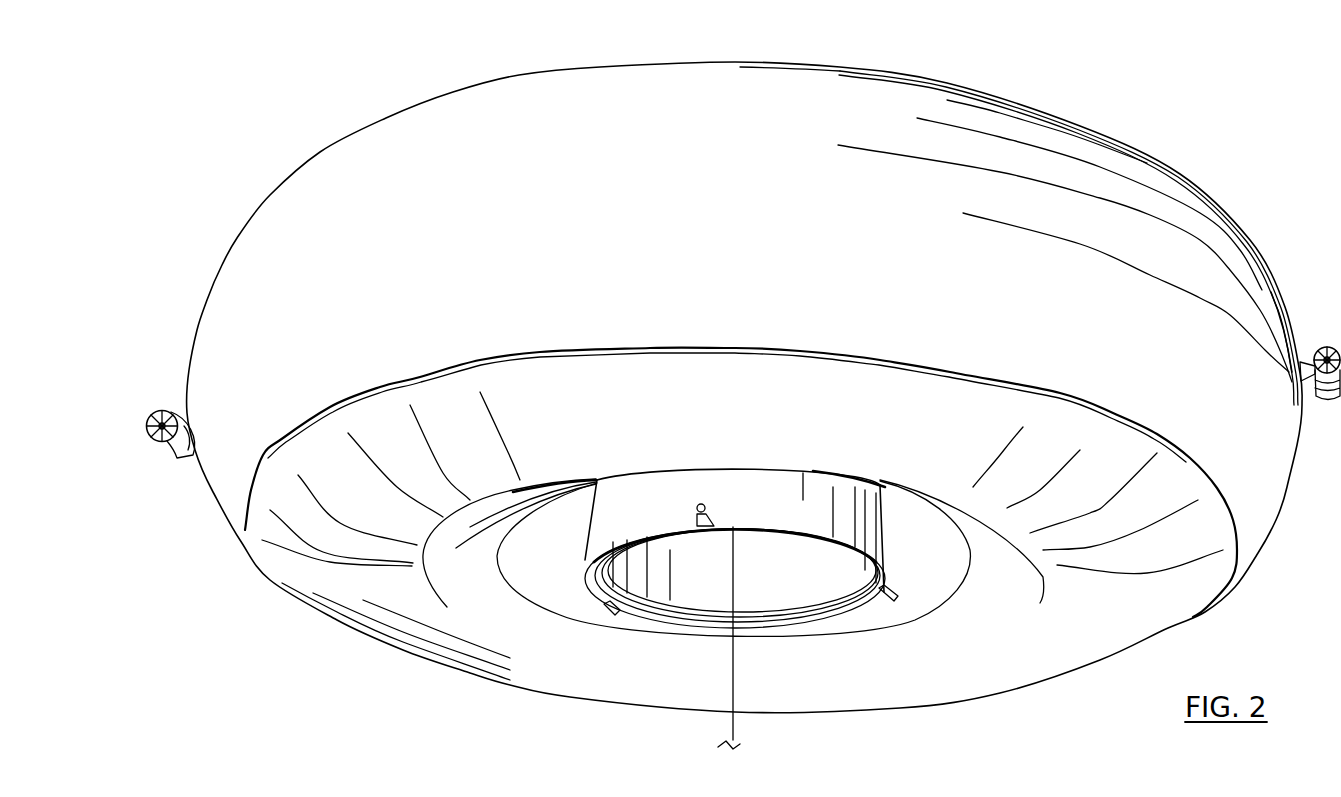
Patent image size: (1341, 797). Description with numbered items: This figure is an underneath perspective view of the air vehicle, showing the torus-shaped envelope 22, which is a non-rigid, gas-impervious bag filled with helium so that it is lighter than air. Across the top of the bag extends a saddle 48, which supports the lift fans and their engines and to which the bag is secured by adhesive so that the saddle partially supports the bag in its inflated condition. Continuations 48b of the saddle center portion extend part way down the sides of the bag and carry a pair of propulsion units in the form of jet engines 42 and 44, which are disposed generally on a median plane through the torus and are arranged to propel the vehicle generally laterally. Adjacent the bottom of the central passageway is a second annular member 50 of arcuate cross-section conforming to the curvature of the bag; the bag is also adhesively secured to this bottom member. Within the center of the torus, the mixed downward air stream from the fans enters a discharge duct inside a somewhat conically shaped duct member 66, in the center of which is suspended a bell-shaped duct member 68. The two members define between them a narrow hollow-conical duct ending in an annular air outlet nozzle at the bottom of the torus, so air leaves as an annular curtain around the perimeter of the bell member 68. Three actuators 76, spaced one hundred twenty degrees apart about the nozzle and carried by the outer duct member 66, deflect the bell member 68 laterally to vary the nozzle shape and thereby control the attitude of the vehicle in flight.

The envelope 22 is at (937, 104).
The jet engine 42 is at (176, 470).
The jet engine 44 is at (1327, 330).
The saddle 48 is at (804, 56).
The continuation of the saddle center portion 48b is at (1284, 312).
The second annular member 50 is at (738, 426).
The conically shaped duct member 66 is at (592, 535).
The bell-shaped duct member 68 is at (786, 589).
The actuator 76 is at (725, 509).